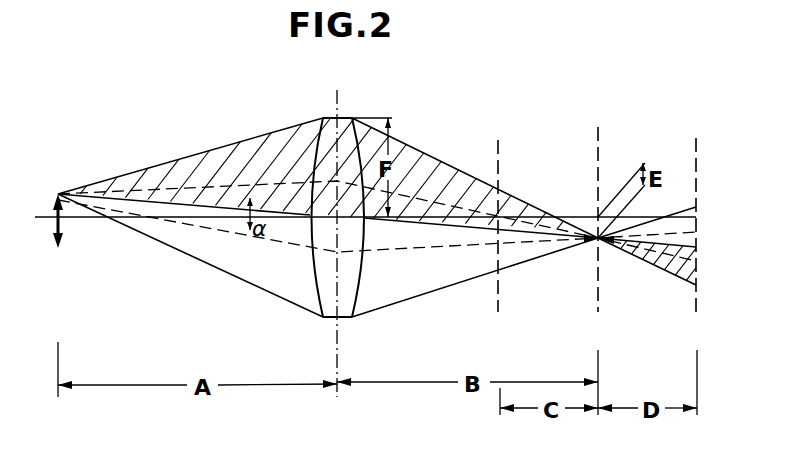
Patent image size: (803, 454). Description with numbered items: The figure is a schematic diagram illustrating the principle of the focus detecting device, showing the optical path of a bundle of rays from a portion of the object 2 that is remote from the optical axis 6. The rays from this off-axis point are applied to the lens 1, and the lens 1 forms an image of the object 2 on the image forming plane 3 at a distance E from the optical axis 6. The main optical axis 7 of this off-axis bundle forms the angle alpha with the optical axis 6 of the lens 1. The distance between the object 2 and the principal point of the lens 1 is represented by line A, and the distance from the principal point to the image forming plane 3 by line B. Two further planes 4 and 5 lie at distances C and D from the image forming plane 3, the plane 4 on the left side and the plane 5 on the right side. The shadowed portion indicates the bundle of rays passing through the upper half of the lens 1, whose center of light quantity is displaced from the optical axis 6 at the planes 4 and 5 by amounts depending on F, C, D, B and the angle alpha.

The lens 1 is at (347, 118).
The object 2 is at (58, 192).
The image forming plane 3 is at (598, 150).
The plane 4 is at (498, 152).
The plane 5 is at (697, 166).
The optical axis 6 is at (207, 218).
The main optical axis 7 is at (171, 200).